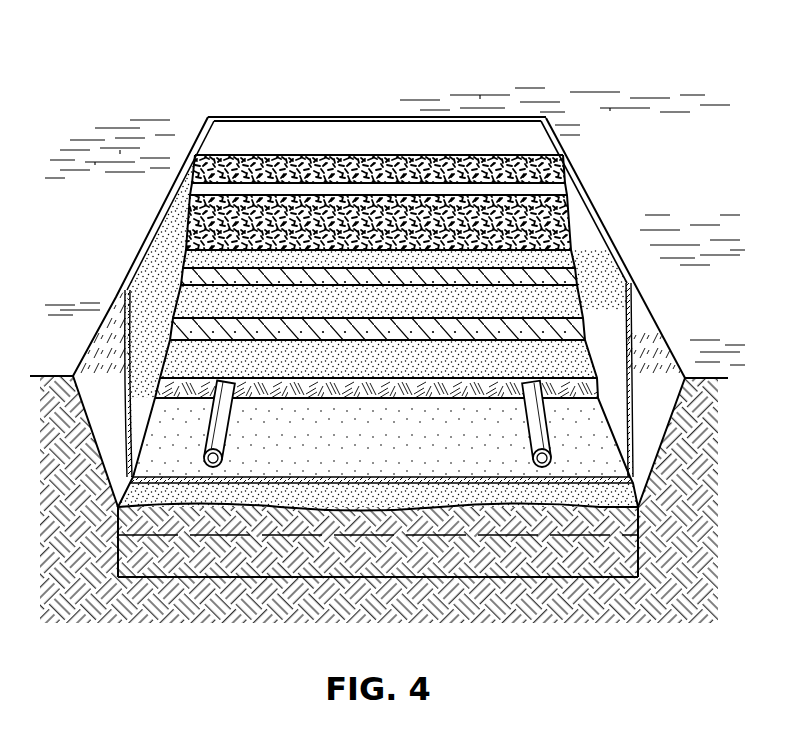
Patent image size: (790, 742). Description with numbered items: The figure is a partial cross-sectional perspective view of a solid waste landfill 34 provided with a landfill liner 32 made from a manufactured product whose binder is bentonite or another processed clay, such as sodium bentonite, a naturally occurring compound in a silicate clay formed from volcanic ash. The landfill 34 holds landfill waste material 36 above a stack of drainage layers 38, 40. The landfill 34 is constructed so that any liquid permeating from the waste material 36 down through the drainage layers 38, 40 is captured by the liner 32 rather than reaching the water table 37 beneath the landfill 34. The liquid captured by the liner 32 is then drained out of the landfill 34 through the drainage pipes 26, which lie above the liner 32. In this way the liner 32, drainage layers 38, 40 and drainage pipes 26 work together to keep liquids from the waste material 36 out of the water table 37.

The drainage pipes 26 is at (205, 433).
The landfill liner 32 is at (648, 305).
The solid waste landfill 34 is at (614, 172).
The landfill waste material 36 is at (215, 188).
The water table 37 is at (118, 577).
The drainage layer 38 is at (182, 277).
The drainage layer 40 is at (115, 297).